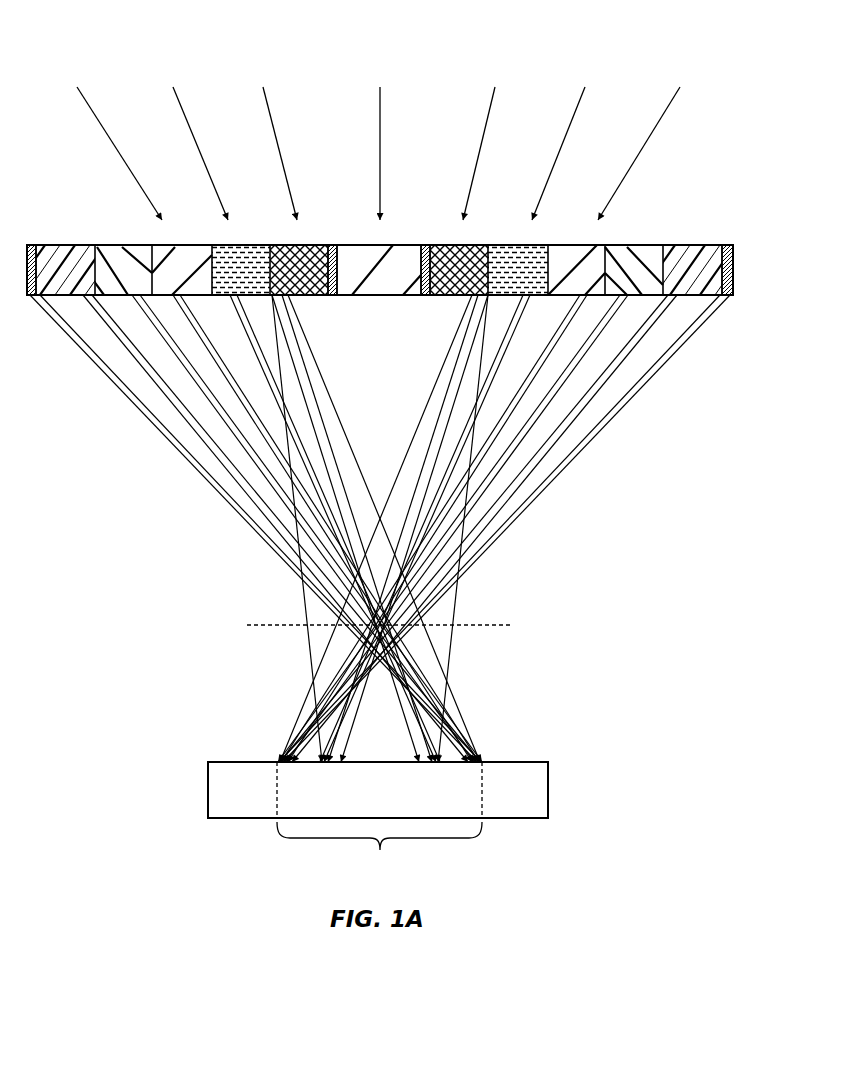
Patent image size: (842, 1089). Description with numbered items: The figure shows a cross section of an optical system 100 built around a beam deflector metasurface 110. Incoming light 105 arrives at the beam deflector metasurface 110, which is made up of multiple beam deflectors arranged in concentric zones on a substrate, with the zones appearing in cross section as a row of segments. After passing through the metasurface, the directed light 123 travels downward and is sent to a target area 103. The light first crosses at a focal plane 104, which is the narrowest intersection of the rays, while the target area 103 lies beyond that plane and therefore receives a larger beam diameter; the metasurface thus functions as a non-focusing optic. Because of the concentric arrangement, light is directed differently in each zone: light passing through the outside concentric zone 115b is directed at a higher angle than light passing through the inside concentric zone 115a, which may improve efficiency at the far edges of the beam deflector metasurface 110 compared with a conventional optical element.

The optical system 100 is at (60, 58).
The target area 103 is at (378, 817).
The focal plane 104 is at (497, 622).
The light 105 is at (116, 150).
The beam deflector metasurface 110 is at (404, 244).
The inside concentric zone 115a is at (427, 245).
The outside concentric zone 115b is at (729, 245).
The light 123 is at (660, 370).